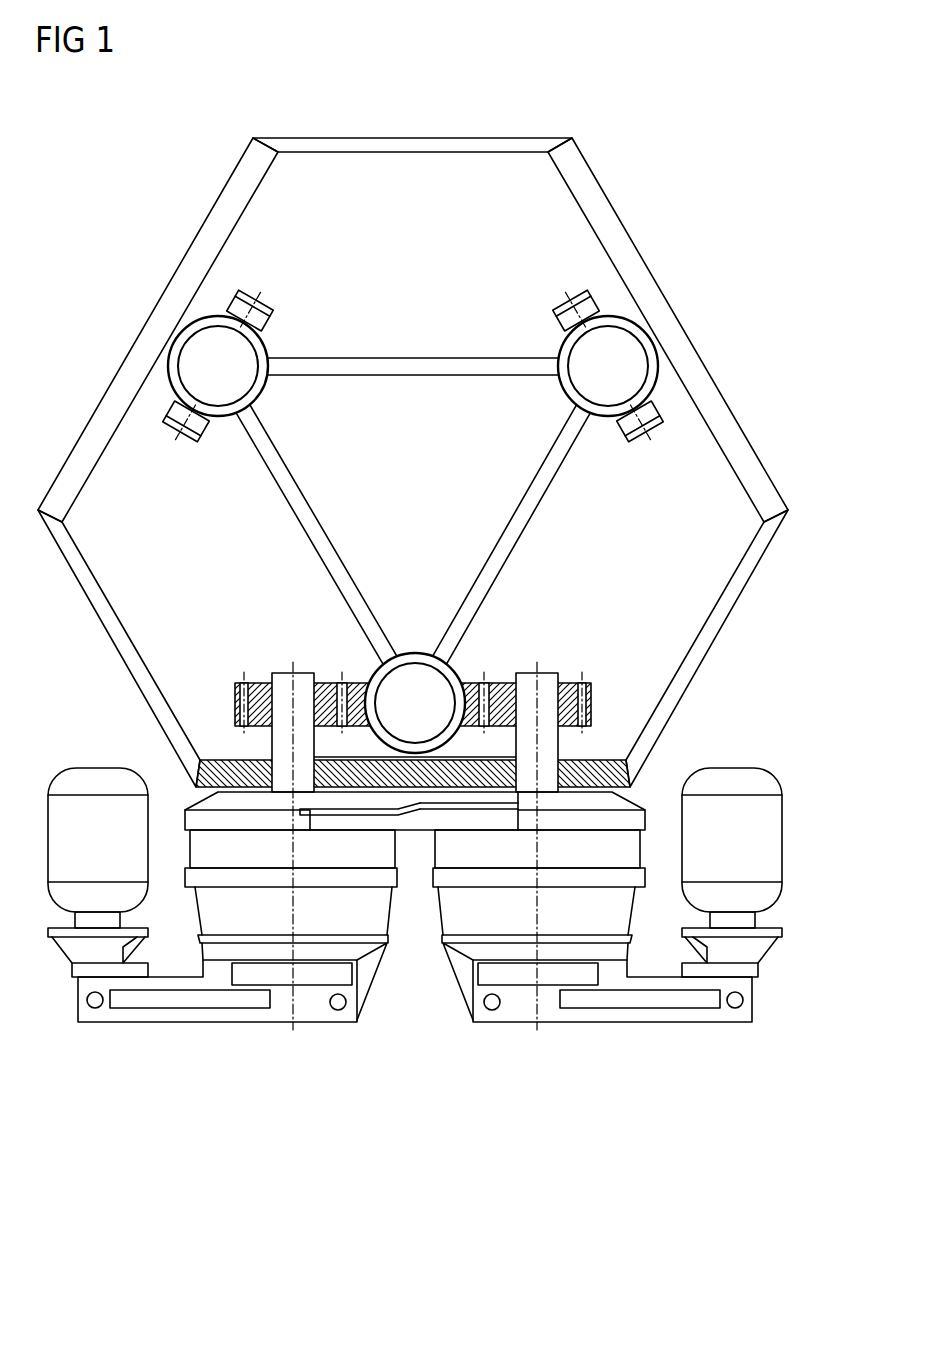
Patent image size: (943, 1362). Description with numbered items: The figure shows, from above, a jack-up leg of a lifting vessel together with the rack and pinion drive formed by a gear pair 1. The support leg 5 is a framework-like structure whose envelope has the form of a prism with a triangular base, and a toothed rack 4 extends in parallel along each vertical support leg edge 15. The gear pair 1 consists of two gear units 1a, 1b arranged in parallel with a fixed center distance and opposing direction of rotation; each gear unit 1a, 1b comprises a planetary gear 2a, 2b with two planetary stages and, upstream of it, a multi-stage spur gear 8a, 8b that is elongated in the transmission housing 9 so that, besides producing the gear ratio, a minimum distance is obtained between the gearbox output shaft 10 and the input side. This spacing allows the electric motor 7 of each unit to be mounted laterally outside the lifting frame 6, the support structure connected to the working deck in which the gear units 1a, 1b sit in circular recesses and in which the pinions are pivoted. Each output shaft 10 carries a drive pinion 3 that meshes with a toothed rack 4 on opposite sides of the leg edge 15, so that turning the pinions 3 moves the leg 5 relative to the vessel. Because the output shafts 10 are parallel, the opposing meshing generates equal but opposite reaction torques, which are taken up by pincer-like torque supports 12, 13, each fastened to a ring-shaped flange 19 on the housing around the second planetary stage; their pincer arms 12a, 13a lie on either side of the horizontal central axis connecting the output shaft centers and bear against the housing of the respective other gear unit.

The gear pair 1 is at (415, 938).
The first gear unit 1a is at (243, 975).
The second gear unit 1b is at (587, 973).
The first planetary gear 2a is at (392, 944).
The second planetary gear 2b is at (438, 944).
The drive pinion 3 is at (263, 682).
The toothed rack 4 is at (364, 687).
The support leg 5 is at (556, 513).
The lifting frame 6 is at (613, 760).
The electric motor 7 is at (91, 775).
The first spur gear stages 8a is at (318, 1022).
The second spur gear stages 8b is at (513, 1022).
The transmission housing 9 is at (172, 977).
The gearbox output shaft 10 is at (283, 673).
The first torque support 12 is at (480, 819).
The pincer arm of first torque support 12a is at (325, 823).
The second torque support 13 is at (361, 804).
The pincer arm of second torque support 13a is at (503, 799).
The support leg edge 15 is at (415, 654).
The ring-shaped flange 19 is at (638, 810).